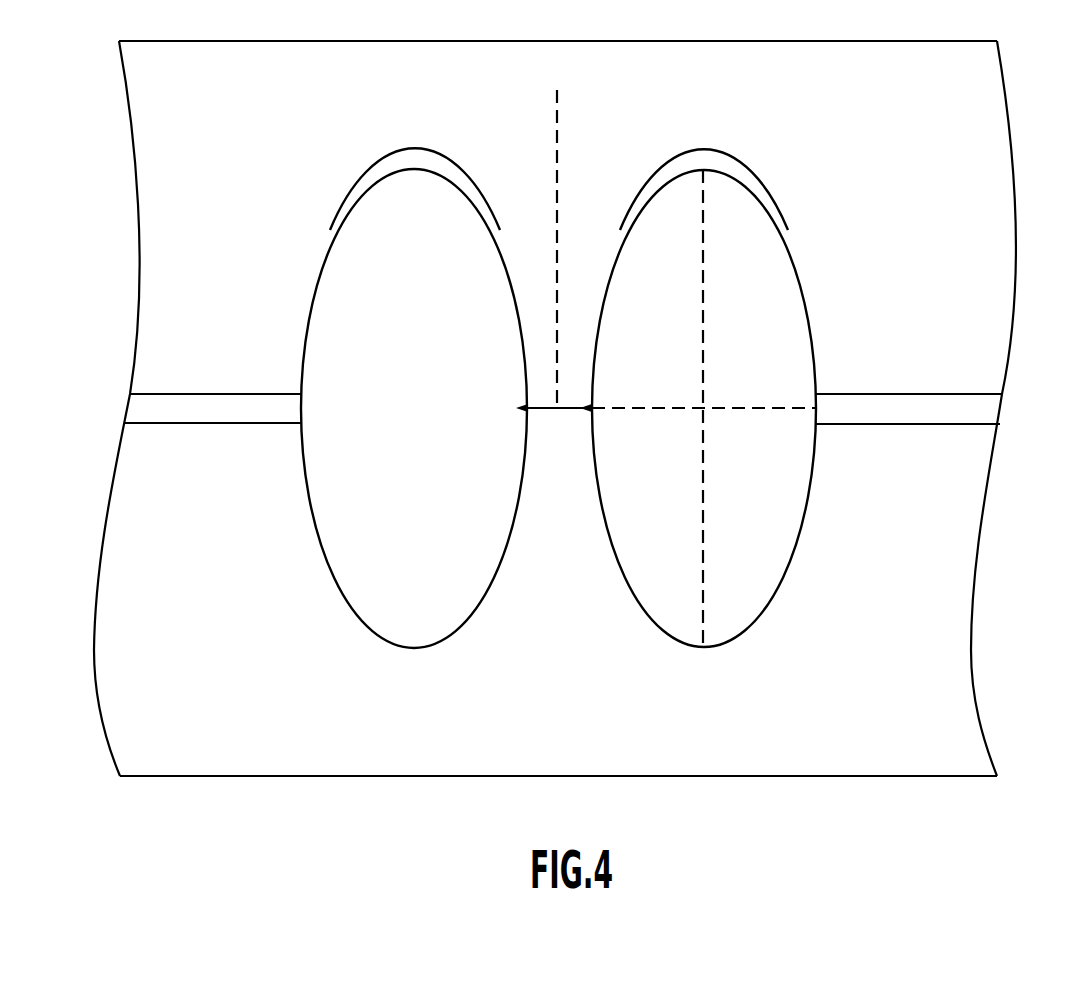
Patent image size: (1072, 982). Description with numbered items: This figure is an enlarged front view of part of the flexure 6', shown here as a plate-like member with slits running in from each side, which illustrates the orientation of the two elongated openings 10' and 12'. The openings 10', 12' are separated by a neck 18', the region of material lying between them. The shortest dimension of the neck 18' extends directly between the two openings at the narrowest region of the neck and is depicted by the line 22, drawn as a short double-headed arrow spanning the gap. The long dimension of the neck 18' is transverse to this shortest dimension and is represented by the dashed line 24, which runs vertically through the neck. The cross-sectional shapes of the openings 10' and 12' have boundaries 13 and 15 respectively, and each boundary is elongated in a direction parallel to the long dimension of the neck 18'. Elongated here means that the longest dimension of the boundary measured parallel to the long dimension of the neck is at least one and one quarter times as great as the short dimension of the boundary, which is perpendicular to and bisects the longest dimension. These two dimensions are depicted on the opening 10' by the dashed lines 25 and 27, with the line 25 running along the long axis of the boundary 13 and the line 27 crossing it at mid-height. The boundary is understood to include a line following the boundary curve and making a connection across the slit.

The plate with slot 6' is at (574, 408).
The elongated opening 10' is at (726, 408).
The elongated opening 12' is at (400, 408).
The boundary 13 is at (722, 170).
The boundary 15 is at (372, 187).
The neck 18' is at (559, 506).
The line depicting shortest dimension of neck 22 is at (560, 412).
The line representing long dimension of neck 24 is at (557, 166).
The line depicting longest dimension of boundary 25 is at (705, 455).
The line depicting short dimension of boundary 27 is at (742, 408).